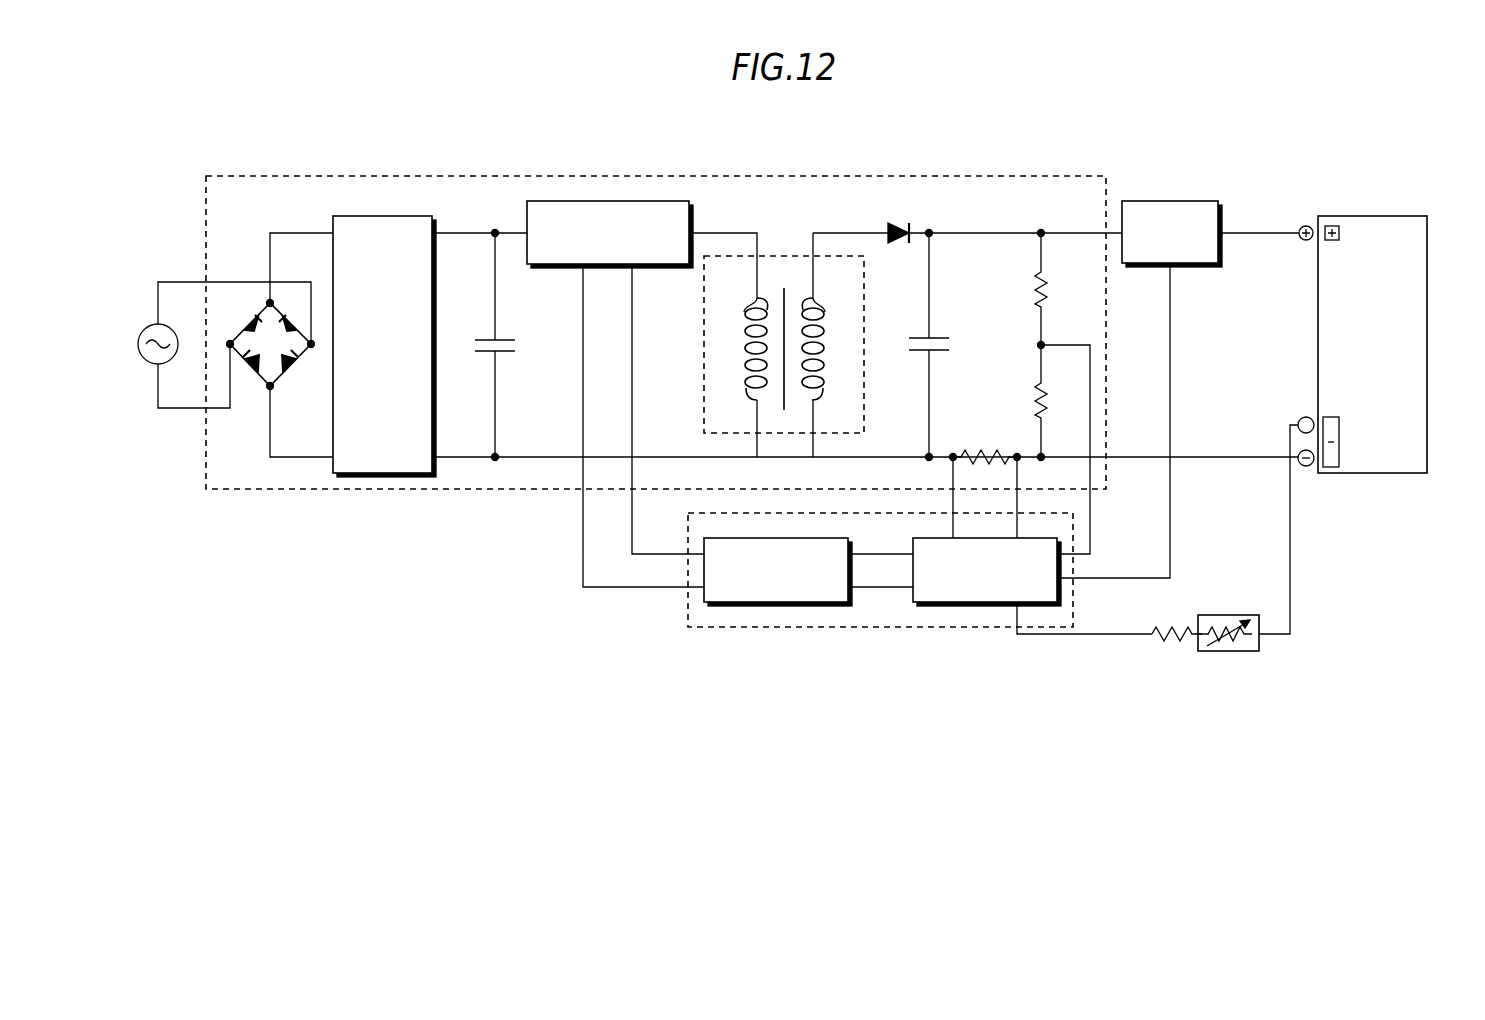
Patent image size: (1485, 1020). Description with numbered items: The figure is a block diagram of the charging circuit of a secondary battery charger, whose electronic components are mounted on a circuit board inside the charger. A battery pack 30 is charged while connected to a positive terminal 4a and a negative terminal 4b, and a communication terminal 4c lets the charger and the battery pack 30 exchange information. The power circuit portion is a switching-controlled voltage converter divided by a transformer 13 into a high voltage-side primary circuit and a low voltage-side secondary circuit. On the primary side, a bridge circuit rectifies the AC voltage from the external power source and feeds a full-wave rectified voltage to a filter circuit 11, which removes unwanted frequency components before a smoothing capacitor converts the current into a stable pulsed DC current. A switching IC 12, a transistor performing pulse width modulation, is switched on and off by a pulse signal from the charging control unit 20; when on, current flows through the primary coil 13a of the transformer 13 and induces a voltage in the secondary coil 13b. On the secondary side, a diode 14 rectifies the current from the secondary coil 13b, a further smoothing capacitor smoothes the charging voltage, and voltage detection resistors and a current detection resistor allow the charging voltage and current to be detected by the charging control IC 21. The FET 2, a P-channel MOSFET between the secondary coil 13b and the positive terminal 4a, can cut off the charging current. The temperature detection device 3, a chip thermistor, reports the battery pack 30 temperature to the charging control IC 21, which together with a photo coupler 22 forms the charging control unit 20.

The filter circuit 11 is at (381, 216).
The switching IC 12 is at (608, 200).
The transformer 13 is at (788, 328).
The primary coil 13a is at (747, 300).
The secondary coil 13b is at (827, 300).
The diode 14 is at (893, 222).
The FET 2 is at (1170, 200).
The positive terminal 4a is at (1306, 226).
The negative terminal 4b is at (1306, 466).
The communication terminal 4c is at (1299, 418).
The battery pack 30 is at (1370, 215).
The charging control unit 20 is at (867, 476).
The charging control IC 21 is at (988, 606).
The photo coupler 22 is at (779, 606).
The temperature detection device 3 is at (1232, 652).